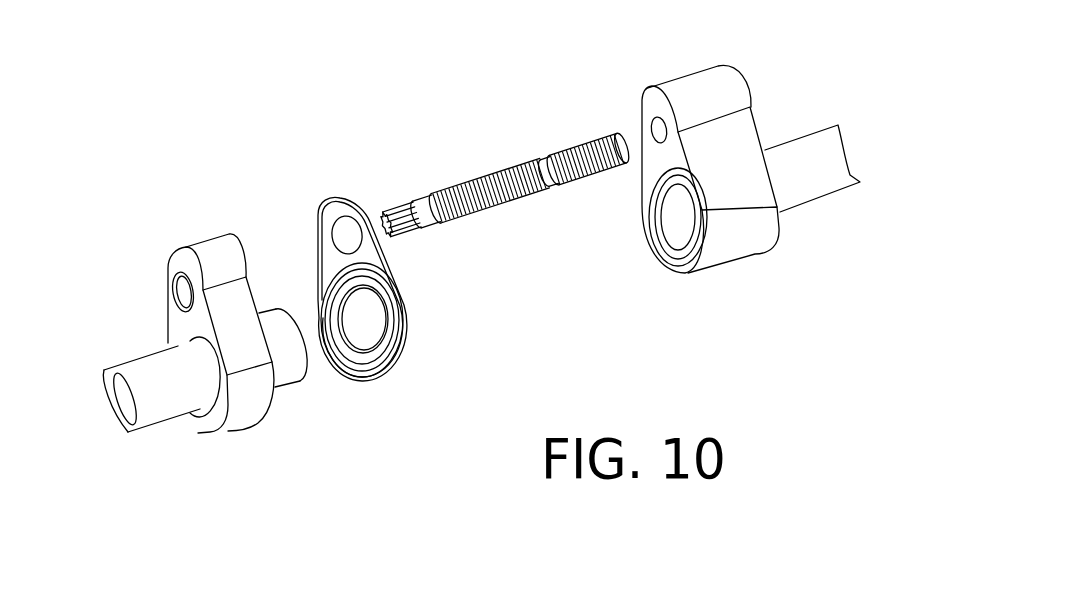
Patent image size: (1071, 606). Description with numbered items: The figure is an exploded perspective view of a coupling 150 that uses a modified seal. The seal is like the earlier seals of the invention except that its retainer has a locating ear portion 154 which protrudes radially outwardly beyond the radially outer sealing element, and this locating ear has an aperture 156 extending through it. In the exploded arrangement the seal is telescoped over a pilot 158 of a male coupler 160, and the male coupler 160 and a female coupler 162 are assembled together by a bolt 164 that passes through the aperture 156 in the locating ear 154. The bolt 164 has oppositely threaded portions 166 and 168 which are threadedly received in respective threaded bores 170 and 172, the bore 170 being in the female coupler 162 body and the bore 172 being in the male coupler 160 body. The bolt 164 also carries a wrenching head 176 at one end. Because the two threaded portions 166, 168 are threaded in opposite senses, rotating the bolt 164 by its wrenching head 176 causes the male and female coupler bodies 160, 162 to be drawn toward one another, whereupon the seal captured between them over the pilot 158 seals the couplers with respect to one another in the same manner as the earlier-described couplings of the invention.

The coupling 150 is at (145, 205).
The locating ear portion 154 is at (322, 202).
The aperture 156 is at (340, 233).
The pilot 158 is at (296, 384).
The male coupler 160 is at (231, 445).
The female coupler 162 is at (717, 63).
The bolt 164 is at (517, 153).
The threaded portion 166 is at (592, 130).
The threaded portion 168 is at (457, 180).
The threaded bore 170 is at (653, 137).
The threaded bore 172 is at (182, 293).
The wrenching head 176 is at (395, 212).